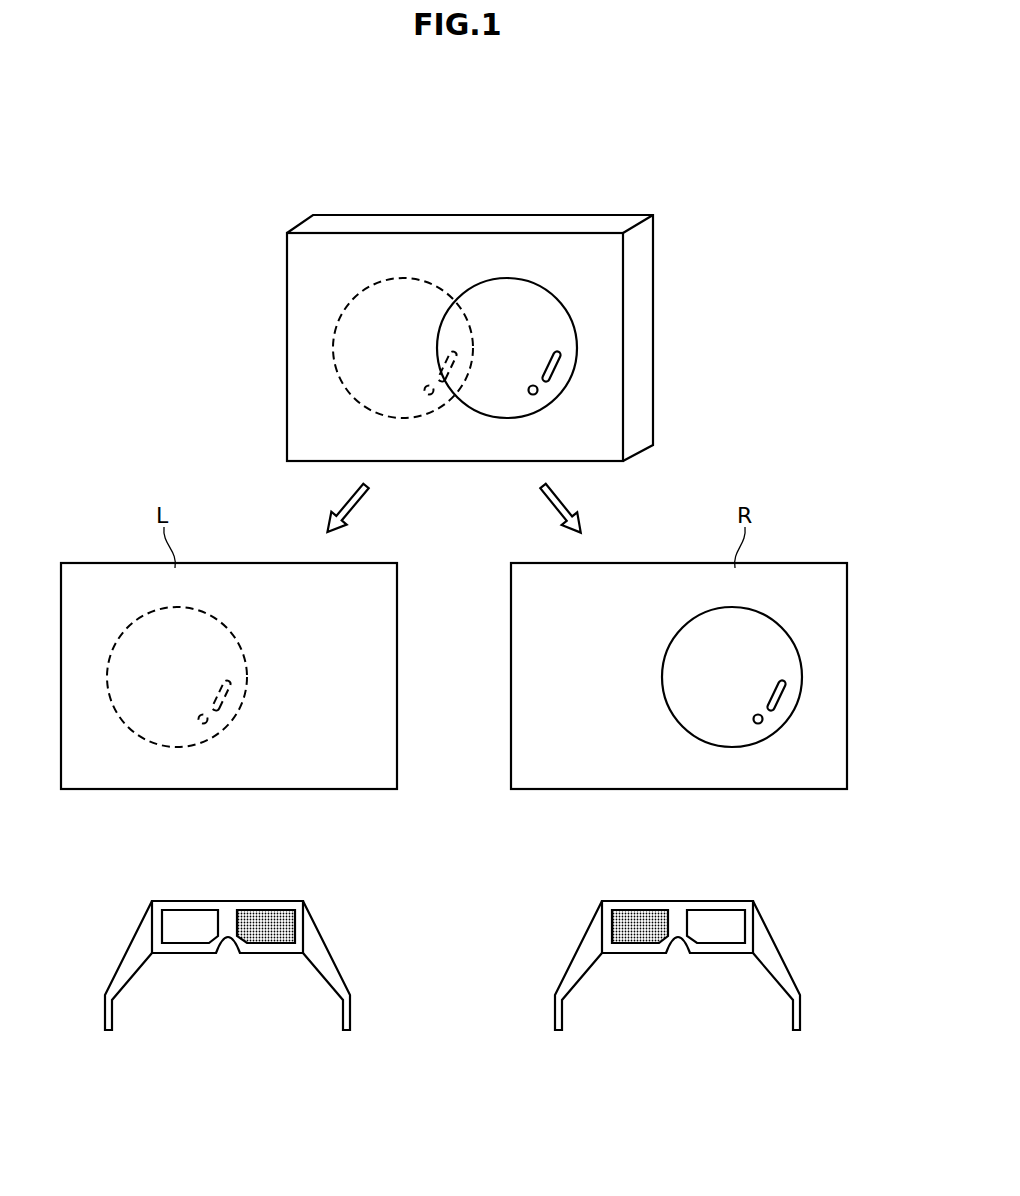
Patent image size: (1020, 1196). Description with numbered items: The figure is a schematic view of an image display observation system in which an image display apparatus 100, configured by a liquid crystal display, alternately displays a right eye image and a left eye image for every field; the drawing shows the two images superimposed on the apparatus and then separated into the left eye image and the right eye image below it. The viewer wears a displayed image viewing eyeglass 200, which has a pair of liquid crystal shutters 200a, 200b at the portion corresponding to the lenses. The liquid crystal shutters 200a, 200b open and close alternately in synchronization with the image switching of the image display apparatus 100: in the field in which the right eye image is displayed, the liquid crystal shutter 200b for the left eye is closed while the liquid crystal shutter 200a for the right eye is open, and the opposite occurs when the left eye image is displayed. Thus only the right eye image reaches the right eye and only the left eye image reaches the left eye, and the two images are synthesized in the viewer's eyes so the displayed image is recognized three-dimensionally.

The image display apparatus 100 is at (645, 276).
The displayed image viewing eyeglass 200 is at (316, 884).
The liquid crystal shutter for the right eye 200a is at (277, 940).
The liquid crystal shutter for the left eye 200b is at (188, 930).